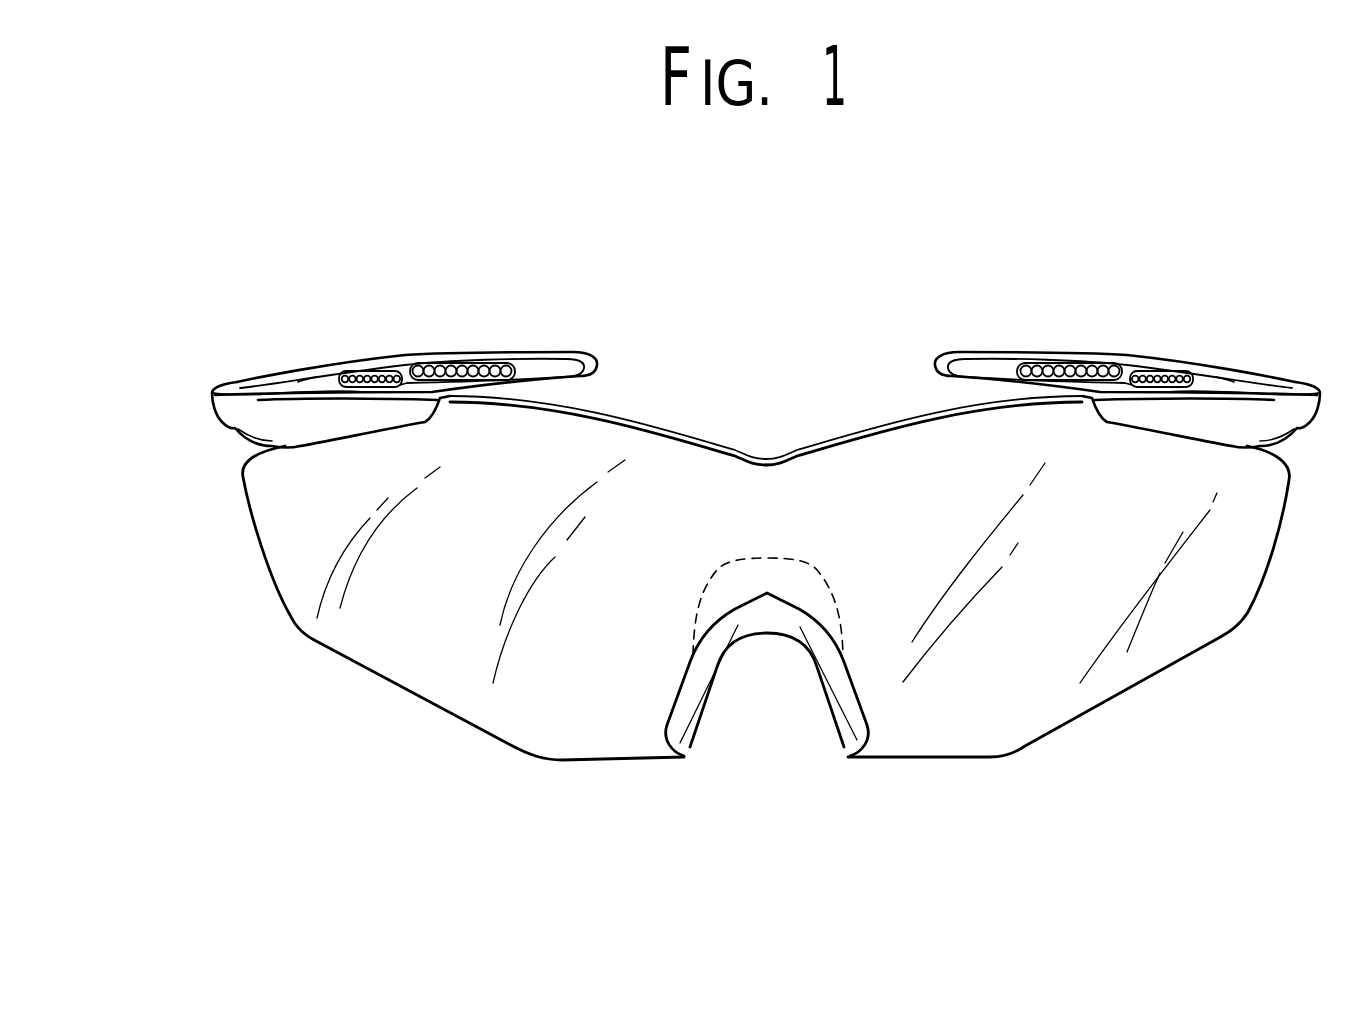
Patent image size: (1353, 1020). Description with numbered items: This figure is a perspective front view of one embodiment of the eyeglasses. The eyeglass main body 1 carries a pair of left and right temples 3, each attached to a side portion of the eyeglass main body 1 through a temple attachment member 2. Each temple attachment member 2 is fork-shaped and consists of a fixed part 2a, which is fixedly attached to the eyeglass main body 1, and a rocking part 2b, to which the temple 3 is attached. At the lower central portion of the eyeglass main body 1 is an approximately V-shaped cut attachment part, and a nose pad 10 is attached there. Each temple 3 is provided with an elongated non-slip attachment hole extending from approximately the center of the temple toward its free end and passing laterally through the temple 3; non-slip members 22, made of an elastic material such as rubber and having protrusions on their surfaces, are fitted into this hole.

The eyeglass main body 1 is at (553, 680).
The temple attachment member 2 is at (764, 312).
The fixed part 2a is at (325, 385).
The rocking part 2b is at (258, 412).
The temple 3 is at (535, 355).
The nose pad 10 is at (842, 708).
The non-slip members 22 is at (447, 383).